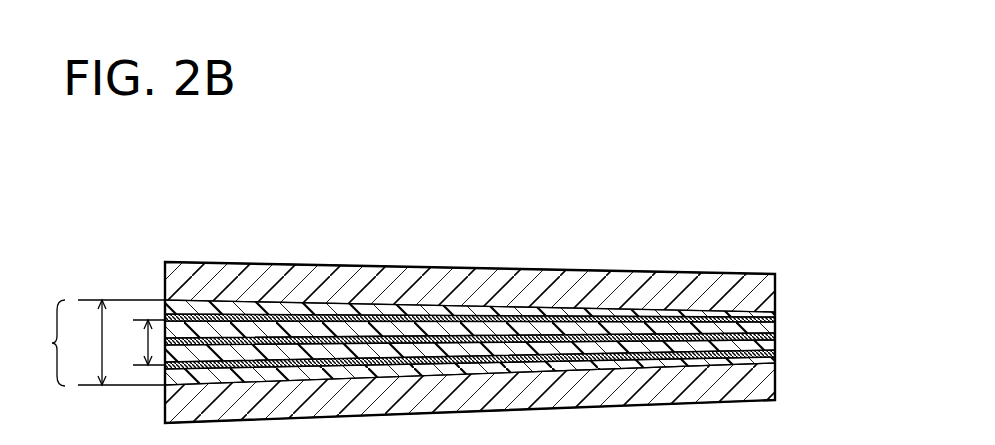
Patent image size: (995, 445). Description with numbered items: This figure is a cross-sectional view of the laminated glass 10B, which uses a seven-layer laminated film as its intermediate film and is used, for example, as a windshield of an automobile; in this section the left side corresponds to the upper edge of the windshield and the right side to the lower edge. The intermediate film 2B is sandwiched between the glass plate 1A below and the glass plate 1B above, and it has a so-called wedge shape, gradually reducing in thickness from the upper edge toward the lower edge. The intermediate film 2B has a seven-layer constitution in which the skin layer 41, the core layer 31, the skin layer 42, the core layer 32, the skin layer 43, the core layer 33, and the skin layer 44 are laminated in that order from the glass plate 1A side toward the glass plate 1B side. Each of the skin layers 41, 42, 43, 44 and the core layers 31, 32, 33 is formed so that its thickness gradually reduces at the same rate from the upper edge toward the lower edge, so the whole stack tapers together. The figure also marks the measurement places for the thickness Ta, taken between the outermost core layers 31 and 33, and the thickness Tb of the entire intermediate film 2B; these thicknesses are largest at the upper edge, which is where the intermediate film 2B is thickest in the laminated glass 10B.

The laminated glass 10B is at (418, 225).
The glass plate 1A is at (720, 395).
The glass plate 1B is at (717, 282).
The intermediate film 2B is at (37, 343).
The core layer 31 is at (775, 351).
The core layer 32 is at (775, 340).
The core layer 33 is at (775, 320).
The skin layer 41 is at (775, 360).
The skin layer 42 is at (775, 348).
The skin layer 43 is at (775, 330).
The skin layer 44 is at (775, 314).
The thickness between outermost core layers Ta is at (140, 342).
The thickness of intermediate film Tb is at (117, 342).